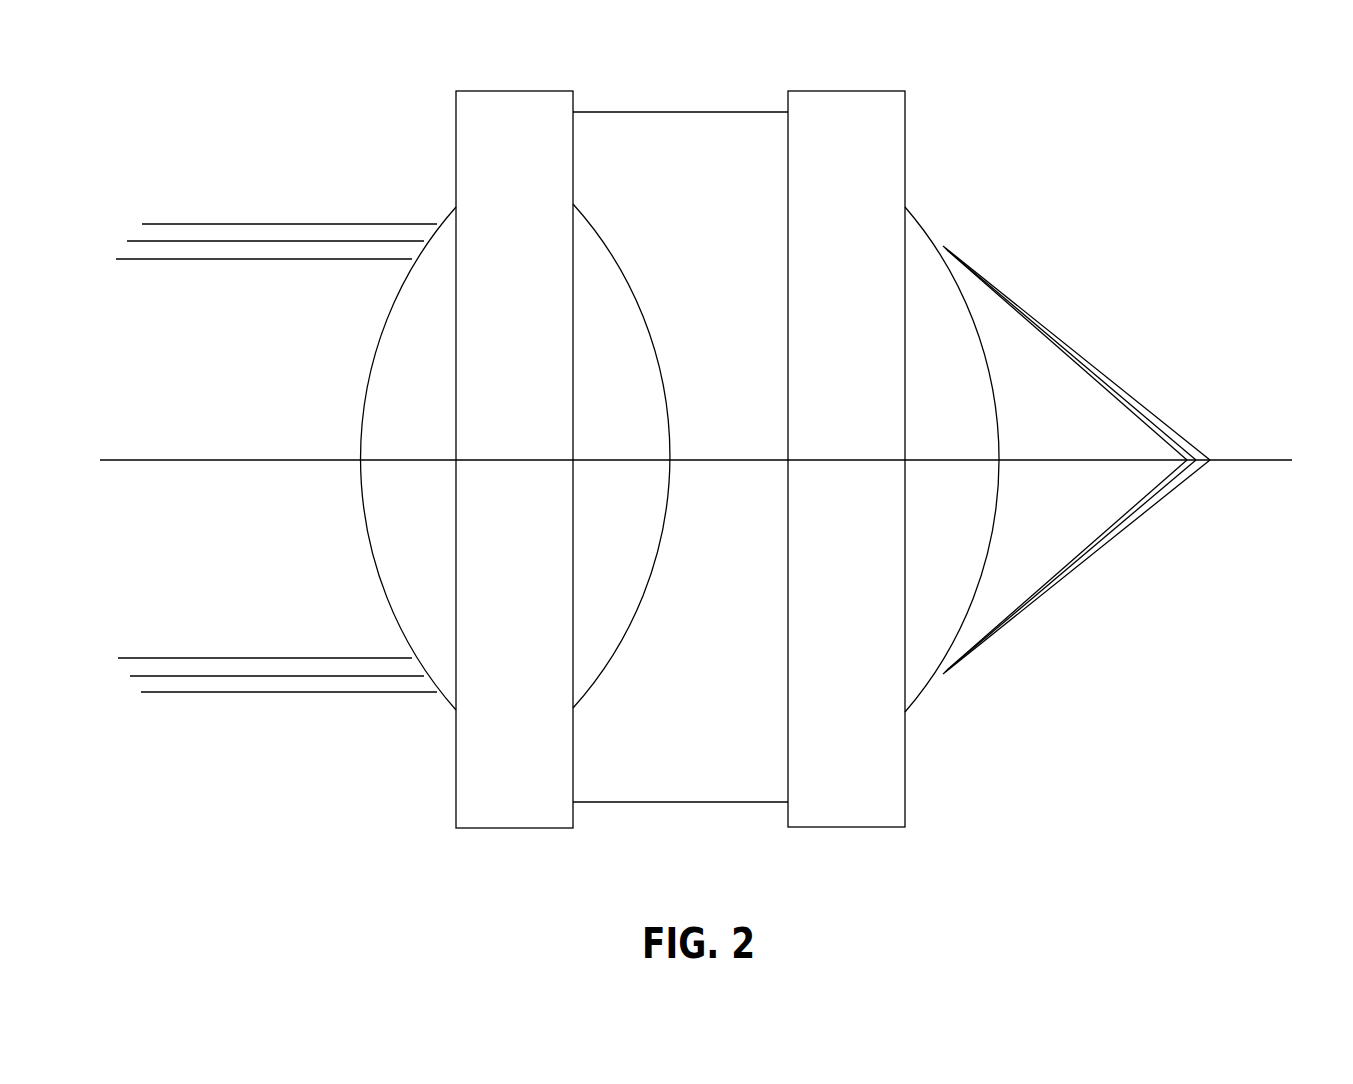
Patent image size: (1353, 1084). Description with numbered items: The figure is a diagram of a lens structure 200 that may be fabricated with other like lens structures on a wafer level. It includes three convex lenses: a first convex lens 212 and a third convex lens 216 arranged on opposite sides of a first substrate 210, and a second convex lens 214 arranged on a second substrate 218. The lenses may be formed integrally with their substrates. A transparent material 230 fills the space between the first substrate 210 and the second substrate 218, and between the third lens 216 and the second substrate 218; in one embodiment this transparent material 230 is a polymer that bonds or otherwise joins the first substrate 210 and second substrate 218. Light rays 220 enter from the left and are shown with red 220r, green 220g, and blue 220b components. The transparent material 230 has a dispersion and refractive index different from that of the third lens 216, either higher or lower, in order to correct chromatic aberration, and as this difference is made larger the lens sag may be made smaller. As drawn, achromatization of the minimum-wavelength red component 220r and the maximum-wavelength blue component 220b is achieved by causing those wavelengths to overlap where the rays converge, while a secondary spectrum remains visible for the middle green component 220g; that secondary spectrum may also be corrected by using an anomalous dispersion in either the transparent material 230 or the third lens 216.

The lens structure 200 is at (713, 439).
The first substrate 210 is at (549, 391).
The first convex lens 212 is at (443, 391).
The third convex lens 216 is at (647, 391).
The transparent material 230 is at (757, 391).
The second substrate 218 is at (882, 391).
The second convex lens 214 is at (979, 391).
The light rays 220 is at (235, 223).
The blue component 220b is at (1060, 342).
The red component 220r is at (1115, 390).
The green component 220g is at (1183, 433).